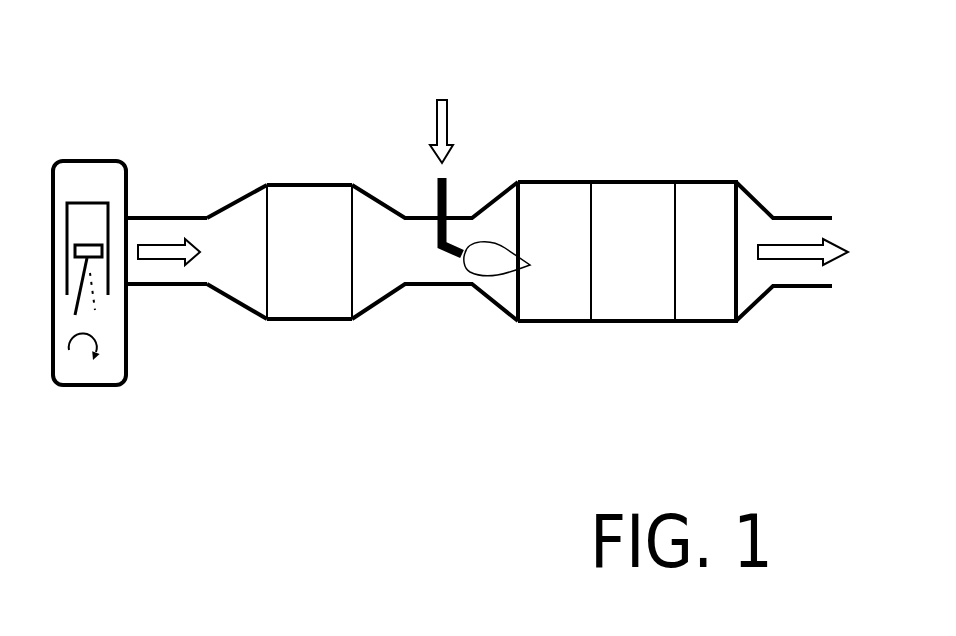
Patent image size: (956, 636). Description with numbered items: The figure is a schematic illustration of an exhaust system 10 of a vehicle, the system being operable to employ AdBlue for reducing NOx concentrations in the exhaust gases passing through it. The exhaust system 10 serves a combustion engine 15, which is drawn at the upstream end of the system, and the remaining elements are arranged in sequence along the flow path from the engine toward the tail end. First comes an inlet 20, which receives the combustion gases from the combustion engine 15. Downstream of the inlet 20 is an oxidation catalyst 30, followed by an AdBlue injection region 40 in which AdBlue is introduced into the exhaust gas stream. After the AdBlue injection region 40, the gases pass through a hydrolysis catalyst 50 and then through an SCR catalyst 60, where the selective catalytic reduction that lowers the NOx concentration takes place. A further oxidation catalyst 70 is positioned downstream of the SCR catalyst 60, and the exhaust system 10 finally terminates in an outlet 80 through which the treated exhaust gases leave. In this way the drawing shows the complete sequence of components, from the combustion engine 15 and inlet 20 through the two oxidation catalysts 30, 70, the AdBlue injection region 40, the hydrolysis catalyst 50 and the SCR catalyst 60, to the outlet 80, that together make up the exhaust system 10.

The exhaust system 10 is at (610, 100).
The combustion engine 15 is at (90, 178).
The inlet 20 is at (248, 266).
The oxidation catalyst 30 is at (322, 264).
The AdBlue injection region 40 is at (396, 264).
The hydrolysis catalyst 50 is at (570, 244).
The SCR catalyst 60 is at (646, 244).
The oxidation catalyst 70 is at (721, 244).
The outlet 80 is at (802, 272).